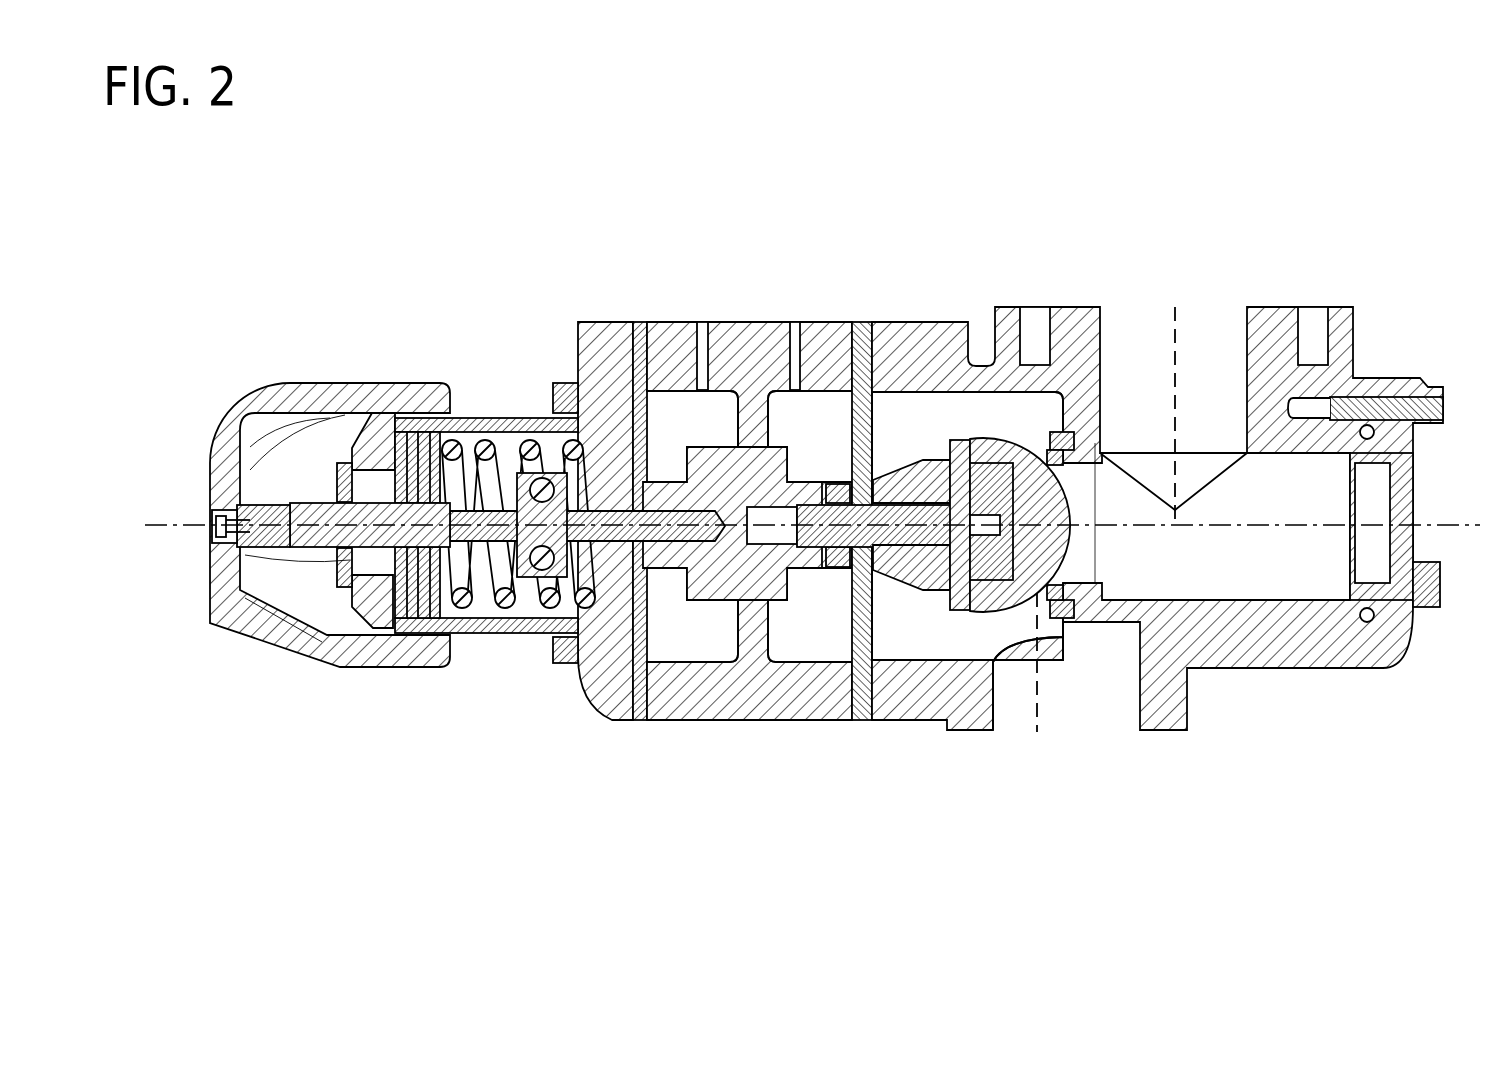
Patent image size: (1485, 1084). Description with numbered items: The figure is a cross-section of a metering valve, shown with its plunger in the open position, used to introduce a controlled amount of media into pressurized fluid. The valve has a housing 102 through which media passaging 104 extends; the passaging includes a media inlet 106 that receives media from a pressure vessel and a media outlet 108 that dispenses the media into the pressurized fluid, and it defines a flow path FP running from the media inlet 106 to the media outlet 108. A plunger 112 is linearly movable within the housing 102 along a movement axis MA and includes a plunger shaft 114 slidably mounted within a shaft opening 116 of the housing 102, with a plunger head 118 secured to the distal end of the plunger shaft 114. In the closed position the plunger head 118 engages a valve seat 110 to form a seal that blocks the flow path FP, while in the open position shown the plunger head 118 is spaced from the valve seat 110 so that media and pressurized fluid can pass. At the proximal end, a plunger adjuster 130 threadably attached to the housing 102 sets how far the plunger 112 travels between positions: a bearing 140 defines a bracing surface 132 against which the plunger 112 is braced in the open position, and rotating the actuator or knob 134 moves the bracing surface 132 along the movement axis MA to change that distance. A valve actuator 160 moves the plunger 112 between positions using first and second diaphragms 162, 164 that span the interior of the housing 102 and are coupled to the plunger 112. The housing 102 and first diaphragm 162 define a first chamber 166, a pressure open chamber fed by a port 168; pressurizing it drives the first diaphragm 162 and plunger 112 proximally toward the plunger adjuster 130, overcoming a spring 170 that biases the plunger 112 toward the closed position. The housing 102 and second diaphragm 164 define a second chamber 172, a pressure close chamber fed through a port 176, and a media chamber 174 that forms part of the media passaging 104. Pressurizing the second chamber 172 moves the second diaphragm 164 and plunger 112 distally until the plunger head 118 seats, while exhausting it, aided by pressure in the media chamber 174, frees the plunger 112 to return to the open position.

The housing 102 is at (1157, 524).
The media passaging 104 is at (1264, 585).
The media inlet 106 is at (1222, 307).
The media outlet 108 is at (1093, 732).
The valve seat 110 is at (1084, 566).
The plunger 112 is at (910, 622).
The plunger shaft 114 is at (811, 606).
The shaft opening 116 is at (762, 555).
The plunger head 118 is at (1000, 615).
The plunger adjuster 130 is at (467, 496).
The bracing surface 132 is at (553, 388).
The actuator or knob 134 is at (357, 382).
The bearing 140 is at (498, 450).
The valve actuator 160 is at (732, 466).
The first diaphragm 162 is at (657, 327).
The second diaphragm 164 is at (843, 327).
The first chamber 166 is at (705, 442).
The port 168 is at (703, 325).
The spring 170 is at (483, 634).
The second chamber 172 is at (828, 444).
The media chamber 174 is at (940, 440).
The port 176 is at (790, 325).
The flow path FP is at (1158, 345).
The movement axis MA is at (789, 526).